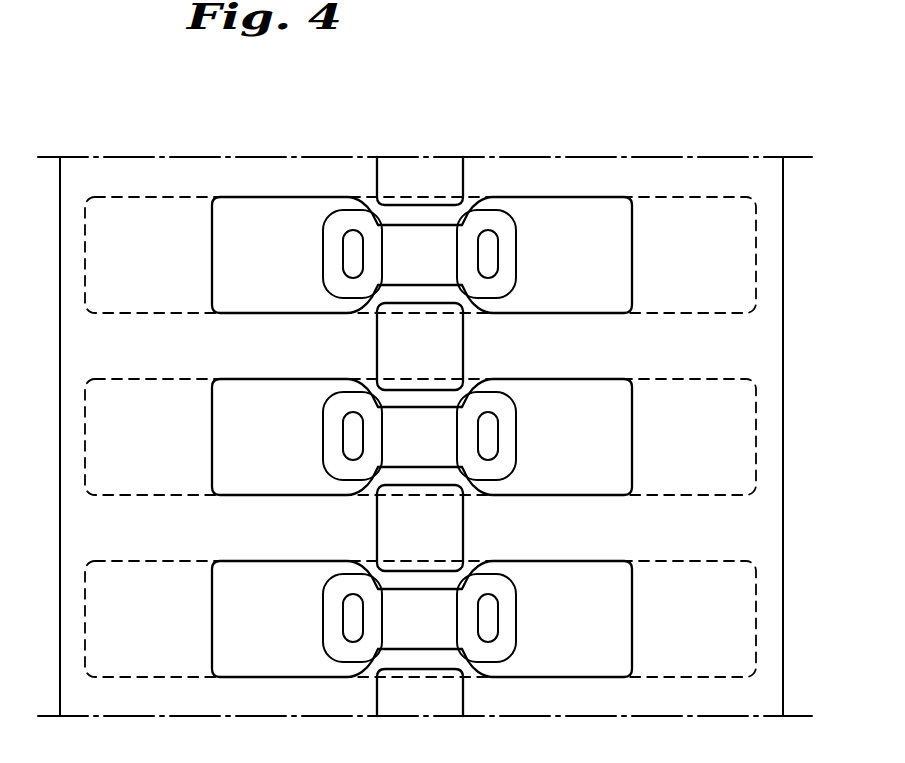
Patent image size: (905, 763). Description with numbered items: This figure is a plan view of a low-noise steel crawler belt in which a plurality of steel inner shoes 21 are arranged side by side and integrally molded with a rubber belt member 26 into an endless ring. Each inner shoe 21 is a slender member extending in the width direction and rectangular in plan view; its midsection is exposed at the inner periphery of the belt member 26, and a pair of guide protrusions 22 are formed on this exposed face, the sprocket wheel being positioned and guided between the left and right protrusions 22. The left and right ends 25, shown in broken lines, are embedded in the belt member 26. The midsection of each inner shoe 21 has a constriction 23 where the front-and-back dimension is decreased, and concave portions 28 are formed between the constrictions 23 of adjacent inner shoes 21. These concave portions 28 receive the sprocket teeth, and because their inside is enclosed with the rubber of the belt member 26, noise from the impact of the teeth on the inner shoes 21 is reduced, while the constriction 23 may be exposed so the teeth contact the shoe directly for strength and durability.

The inner shoe 21 is at (575, 197).
The guide protrusion 22 is at (338, 442).
The constriction 23 is at (405, 285).
The left and right ends 25 is at (90, 463).
The belt member 26 is at (762, 530).
The concave portion 28 is at (441, 367).